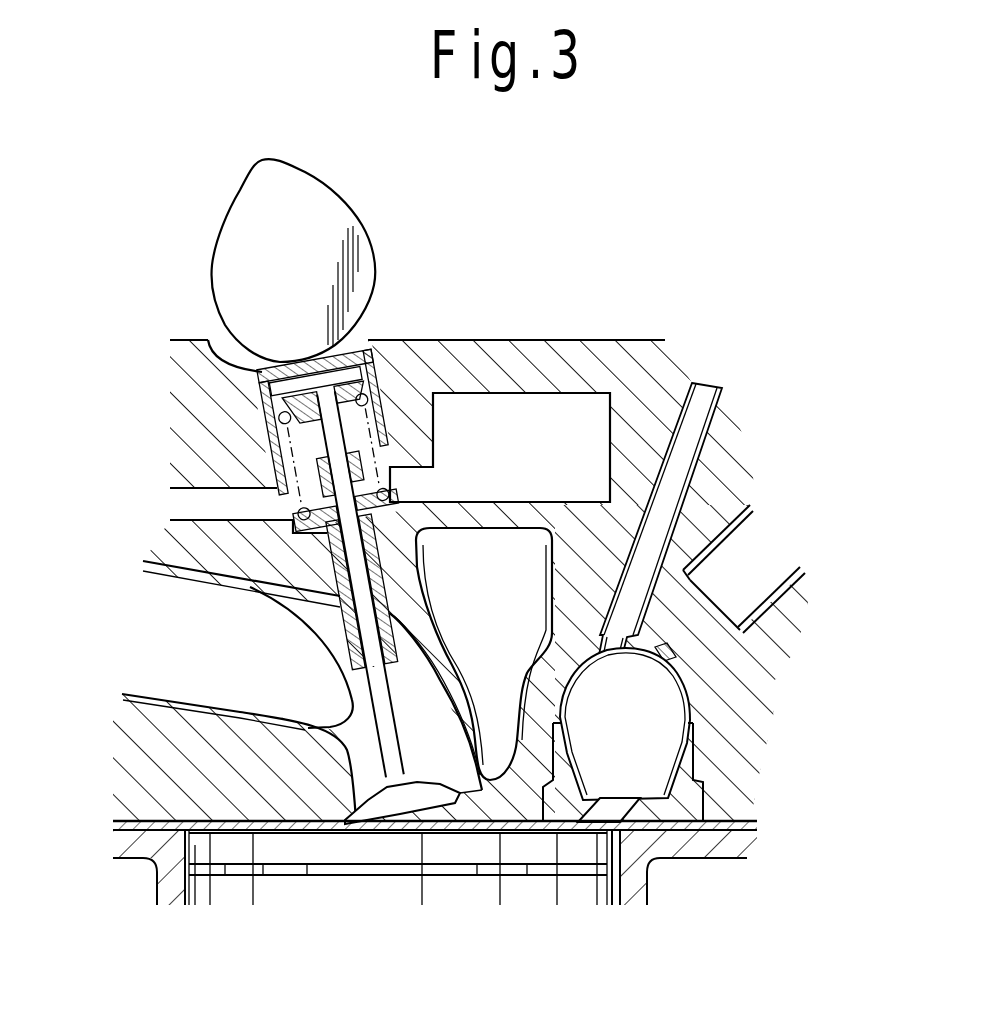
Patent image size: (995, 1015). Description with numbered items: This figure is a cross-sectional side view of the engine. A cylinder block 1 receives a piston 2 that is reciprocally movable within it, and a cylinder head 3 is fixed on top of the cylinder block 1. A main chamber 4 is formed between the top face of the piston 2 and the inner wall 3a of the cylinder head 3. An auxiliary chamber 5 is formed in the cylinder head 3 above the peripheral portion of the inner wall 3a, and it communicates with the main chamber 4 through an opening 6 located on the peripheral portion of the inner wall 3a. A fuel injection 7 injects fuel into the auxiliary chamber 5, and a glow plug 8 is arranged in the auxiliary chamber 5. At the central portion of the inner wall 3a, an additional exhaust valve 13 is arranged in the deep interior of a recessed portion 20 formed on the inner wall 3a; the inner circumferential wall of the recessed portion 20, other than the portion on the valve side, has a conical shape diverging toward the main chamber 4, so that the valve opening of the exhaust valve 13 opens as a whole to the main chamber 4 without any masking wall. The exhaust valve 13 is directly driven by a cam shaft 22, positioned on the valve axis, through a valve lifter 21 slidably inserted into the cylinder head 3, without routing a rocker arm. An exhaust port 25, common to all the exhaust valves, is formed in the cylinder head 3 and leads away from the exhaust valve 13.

The cylinder block 1 is at (640, 880).
The piston 2 is at (580, 893).
The cylinder head 3 is at (637, 360).
The inner wall of the cylinder head 3a is at (337, 828).
The main chamber 4 is at (330, 826).
The auxiliary chamber 5 is at (663, 707).
The opening of the auxiliary chamber 6 is at (627, 800).
The fuel injection 7 is at (775, 584).
The glow plug 8 is at (703, 413).
The additional exhaust valve 13 is at (392, 740).
The recessed portion 20 is at (433, 821).
The valve lifter 21 is at (373, 352).
The cam shaft 22 is at (320, 220).
The exhaust port 25 is at (157, 697).